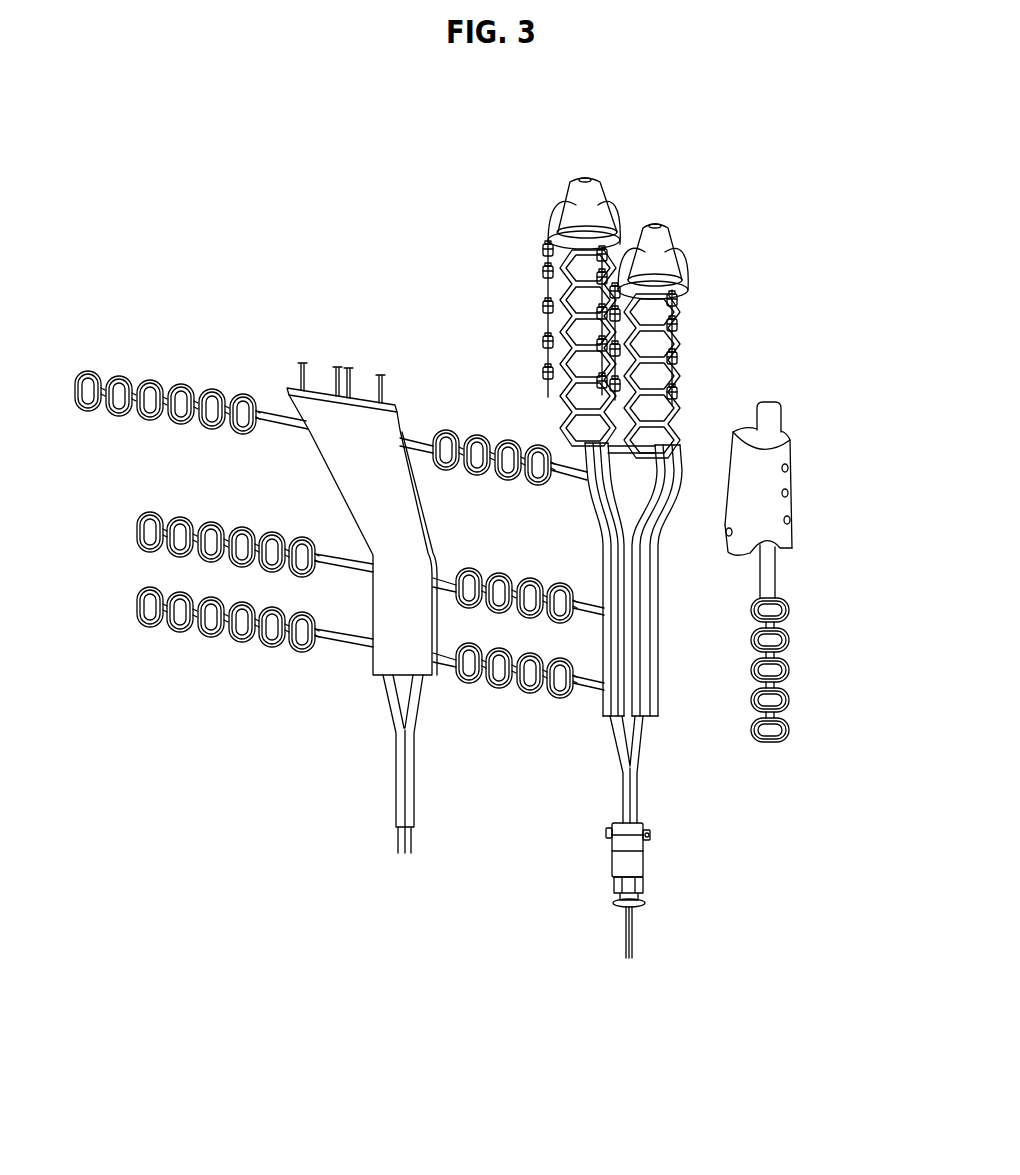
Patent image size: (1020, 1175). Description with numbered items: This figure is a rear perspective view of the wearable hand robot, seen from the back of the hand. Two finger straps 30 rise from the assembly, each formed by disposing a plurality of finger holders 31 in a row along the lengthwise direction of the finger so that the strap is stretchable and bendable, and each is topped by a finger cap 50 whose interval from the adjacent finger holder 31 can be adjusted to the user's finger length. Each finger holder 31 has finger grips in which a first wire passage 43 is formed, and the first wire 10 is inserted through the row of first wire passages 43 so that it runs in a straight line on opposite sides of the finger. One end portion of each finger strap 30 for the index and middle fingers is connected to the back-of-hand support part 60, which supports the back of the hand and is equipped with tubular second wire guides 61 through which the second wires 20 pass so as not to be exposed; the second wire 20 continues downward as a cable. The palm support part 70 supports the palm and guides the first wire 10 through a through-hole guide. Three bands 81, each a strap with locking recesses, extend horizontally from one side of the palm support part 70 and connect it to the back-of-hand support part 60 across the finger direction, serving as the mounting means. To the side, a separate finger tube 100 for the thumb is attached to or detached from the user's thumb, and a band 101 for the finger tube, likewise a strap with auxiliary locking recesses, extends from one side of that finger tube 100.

The first wire 10 is at (380, 374).
The second wire 20 is at (624, 936).
The finger strap 30 is at (531, 268).
The finger holder 31 is at (542, 372).
The first wire passage 43 is at (543, 270).
The finger cap 50 is at (584, 176).
The back-of-hand support part 60 is at (672, 647).
The second wire guide 61 is at (640, 672).
The palm support part 70 is at (325, 467).
The band 81 is at (140, 597).
The finger tube for a thumb 100 is at (800, 477).
The band for the finger tube 101 is at (798, 667).